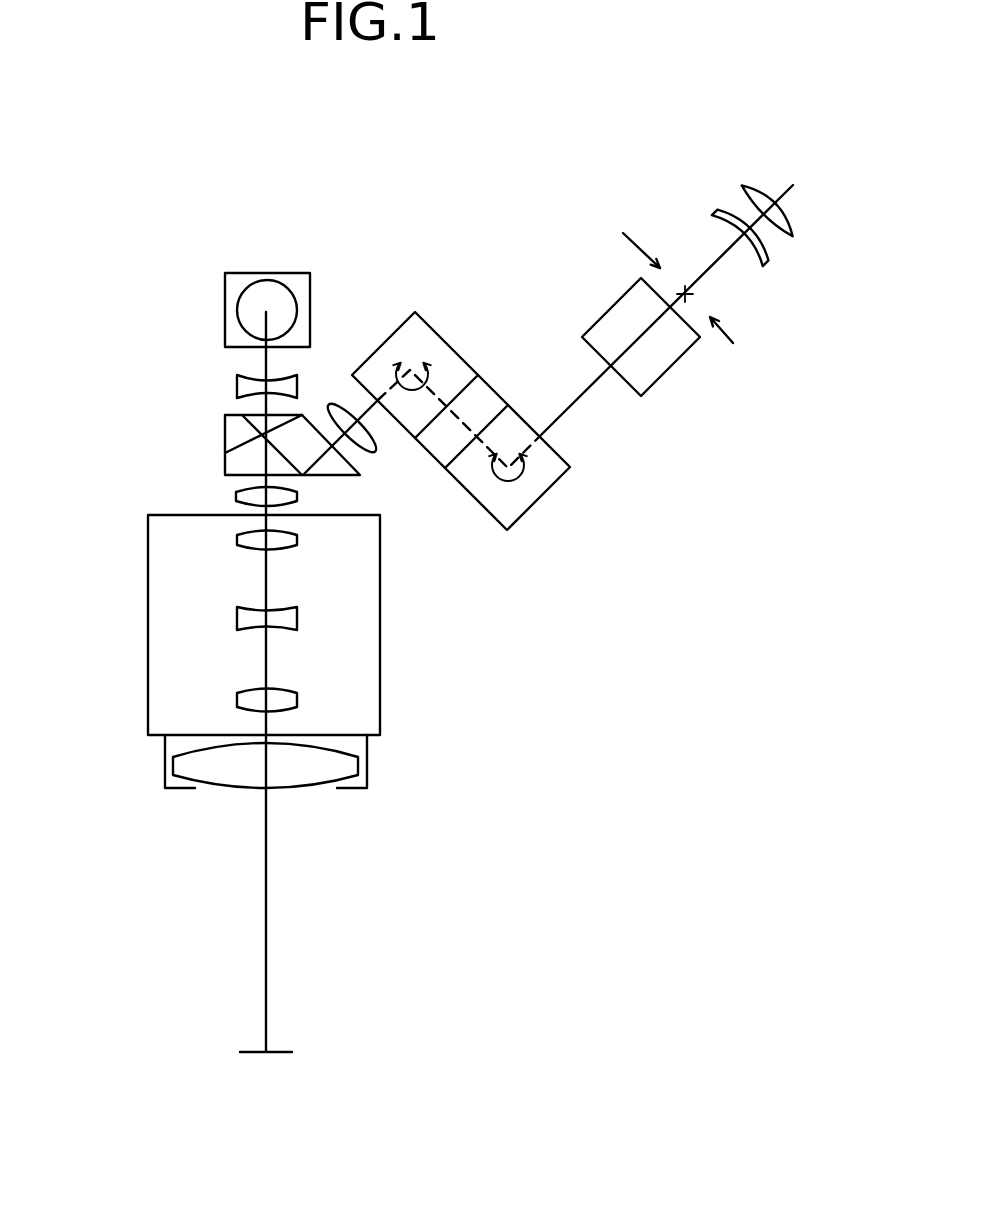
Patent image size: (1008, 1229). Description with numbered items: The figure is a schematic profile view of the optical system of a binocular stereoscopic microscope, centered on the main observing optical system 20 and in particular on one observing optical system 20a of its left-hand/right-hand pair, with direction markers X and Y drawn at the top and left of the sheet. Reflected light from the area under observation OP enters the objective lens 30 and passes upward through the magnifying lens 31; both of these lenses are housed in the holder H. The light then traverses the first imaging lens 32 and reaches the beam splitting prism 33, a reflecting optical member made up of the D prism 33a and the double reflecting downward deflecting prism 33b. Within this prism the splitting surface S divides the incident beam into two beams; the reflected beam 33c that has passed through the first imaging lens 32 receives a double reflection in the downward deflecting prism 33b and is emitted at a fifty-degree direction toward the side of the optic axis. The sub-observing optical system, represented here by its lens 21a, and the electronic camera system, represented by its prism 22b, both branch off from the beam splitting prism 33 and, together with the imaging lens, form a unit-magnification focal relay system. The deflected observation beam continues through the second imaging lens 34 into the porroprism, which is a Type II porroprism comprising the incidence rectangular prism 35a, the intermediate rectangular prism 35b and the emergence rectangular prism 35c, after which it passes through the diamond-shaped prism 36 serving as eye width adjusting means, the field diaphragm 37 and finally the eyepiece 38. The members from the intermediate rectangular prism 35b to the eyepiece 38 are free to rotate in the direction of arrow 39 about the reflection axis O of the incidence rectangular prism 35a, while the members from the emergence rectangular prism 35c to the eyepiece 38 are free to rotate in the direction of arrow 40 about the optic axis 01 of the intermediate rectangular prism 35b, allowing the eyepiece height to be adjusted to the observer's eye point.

The main observing optical system 20 is at (669, 154).
The observing optical system 20a is at (800, 206).
The lens 21a is at (237, 383).
The prism 22b is at (232, 272).
The objective lens 30 is at (345, 768).
The magnifying lens 31 is at (307, 522).
The first imaging lens 32 is at (298, 494).
The beam splitting prism 33 is at (252, 442).
The D prism 33a is at (223, 432).
The double reflecting downward deflecting prism 33b is at (223, 458).
The reflected beam 33c is at (310, 468).
The second imaging lens 34 is at (380, 443).
The incidence rectangular prism 35a is at (415, 311).
The intermediate rectangular prism 35b is at (484, 396).
The emergence rectangular prism 35c is at (570, 466).
The diamond-shaped prism 36 is at (658, 372).
The field diaphragm 37 is at (733, 343).
The eyepiece 38 is at (797, 238).
The arrow 39 is at (430, 362).
The arrow 40 is at (515, 448).
The optic axis 01 is at (517, 476).
The reflection axis O is at (375, 347).
The area under observation OP is at (272, 1050).
The holder H is at (380, 697).
The splitting surface S is at (242, 415).
The X direction X is at (522, 192).
The Y direction Y is at (114, 372).